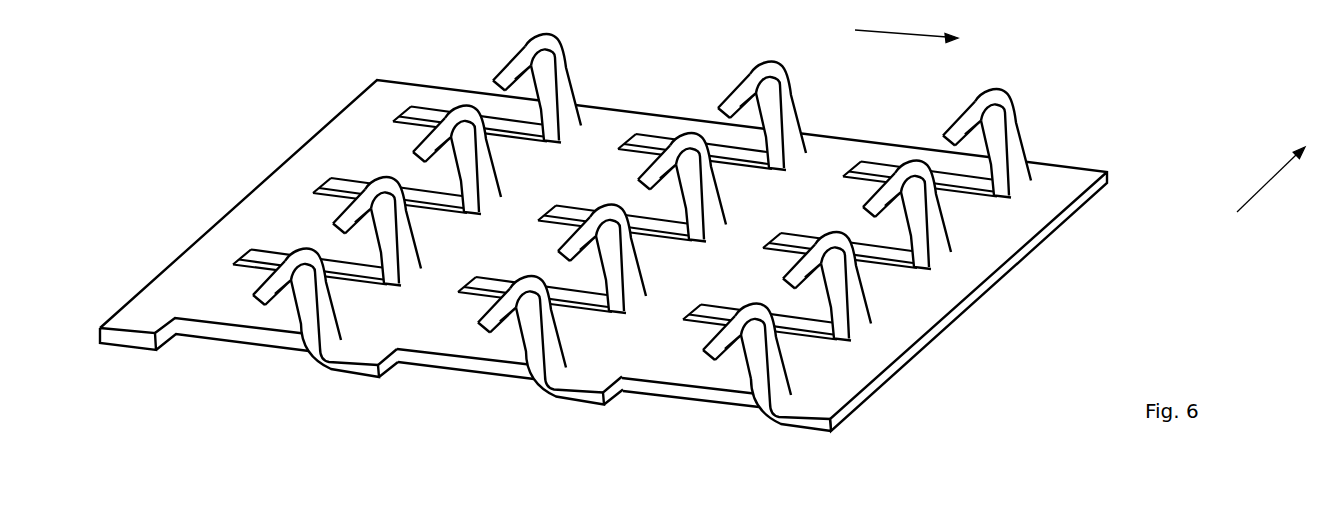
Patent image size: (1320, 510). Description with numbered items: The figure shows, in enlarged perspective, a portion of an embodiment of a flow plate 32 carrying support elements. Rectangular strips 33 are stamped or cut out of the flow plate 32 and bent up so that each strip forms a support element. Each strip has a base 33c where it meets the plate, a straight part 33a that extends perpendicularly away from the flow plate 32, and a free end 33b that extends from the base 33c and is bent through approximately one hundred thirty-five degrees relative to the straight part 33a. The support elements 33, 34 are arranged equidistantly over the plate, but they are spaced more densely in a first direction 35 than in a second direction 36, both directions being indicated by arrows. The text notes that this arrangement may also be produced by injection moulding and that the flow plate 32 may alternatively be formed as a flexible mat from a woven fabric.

The flow plate 32 is at (1043, 230).
The rectangular strip 33 is at (779, 393).
The straight part 33a is at (767, 375).
The free end 33b is at (736, 312).
The base 33c is at (775, 400).
The support element 34 is at (848, 290).
The first direction 35 is at (1258, 196).
The second direction 36 is at (891, 33).